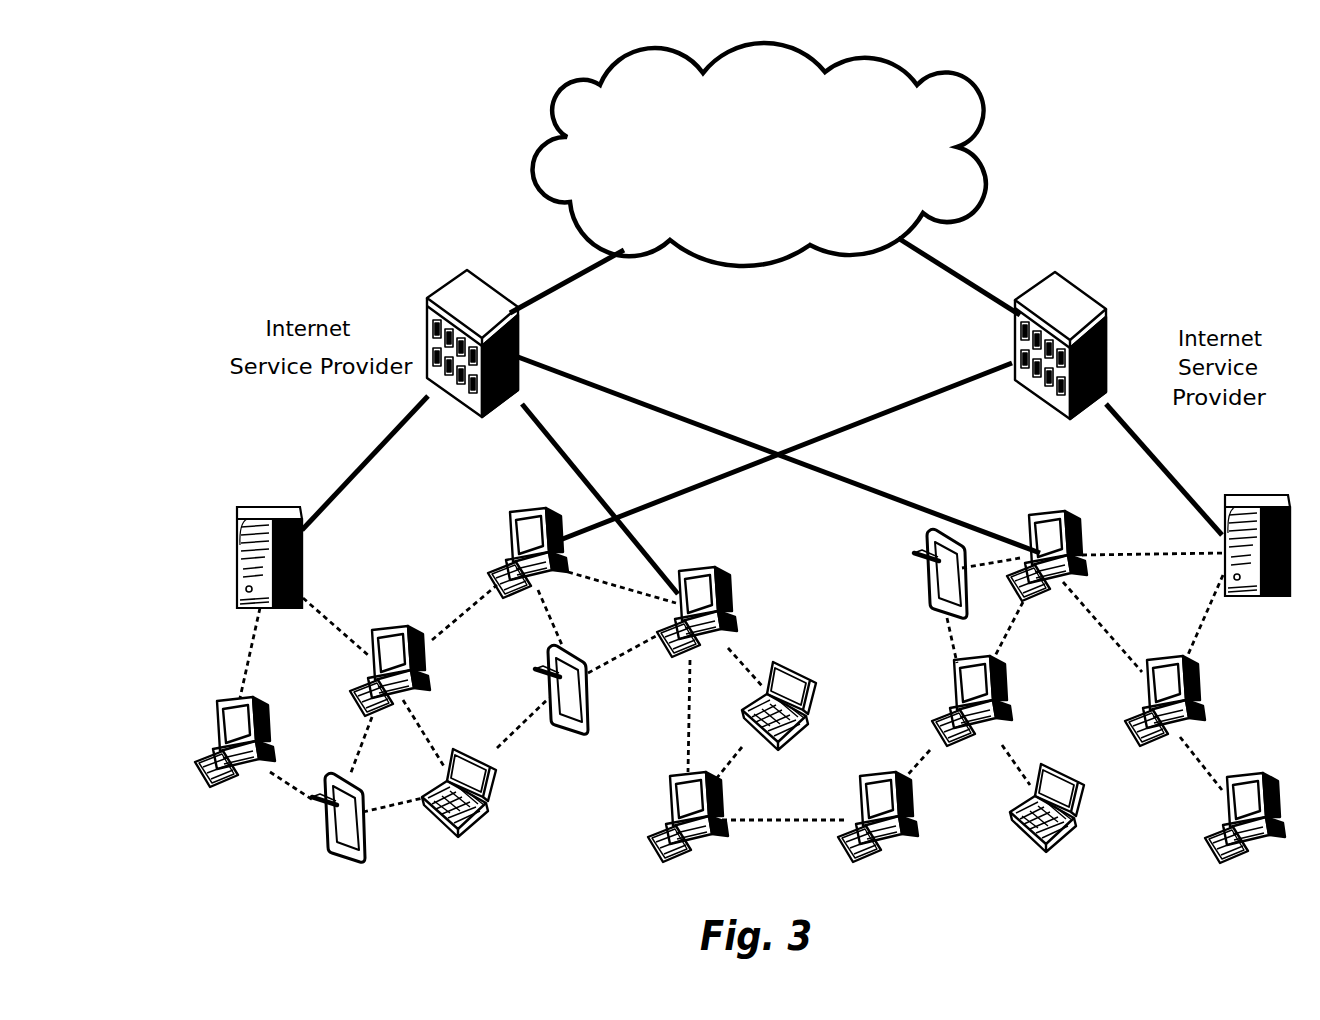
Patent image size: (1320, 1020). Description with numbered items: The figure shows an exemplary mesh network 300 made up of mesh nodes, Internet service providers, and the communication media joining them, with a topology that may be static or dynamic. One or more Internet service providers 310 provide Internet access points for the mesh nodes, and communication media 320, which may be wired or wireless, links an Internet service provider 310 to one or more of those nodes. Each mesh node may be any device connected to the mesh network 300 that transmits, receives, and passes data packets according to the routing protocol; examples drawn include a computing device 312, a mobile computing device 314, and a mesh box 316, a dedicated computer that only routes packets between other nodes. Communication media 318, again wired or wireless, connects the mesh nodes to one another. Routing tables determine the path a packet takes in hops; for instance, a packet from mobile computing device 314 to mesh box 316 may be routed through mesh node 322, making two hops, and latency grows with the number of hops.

The mesh network 300 is at (1158, 210).
The Internet service provider 310 is at (1000, 413).
The computing device 312 is at (1000, 833).
The mobile computing device 314 is at (320, 868).
The mesh box 316 is at (237, 505).
The communication media 318 is at (426, 627).
The communication media 320 is at (866, 421).
The mesh node 322 is at (268, 712).